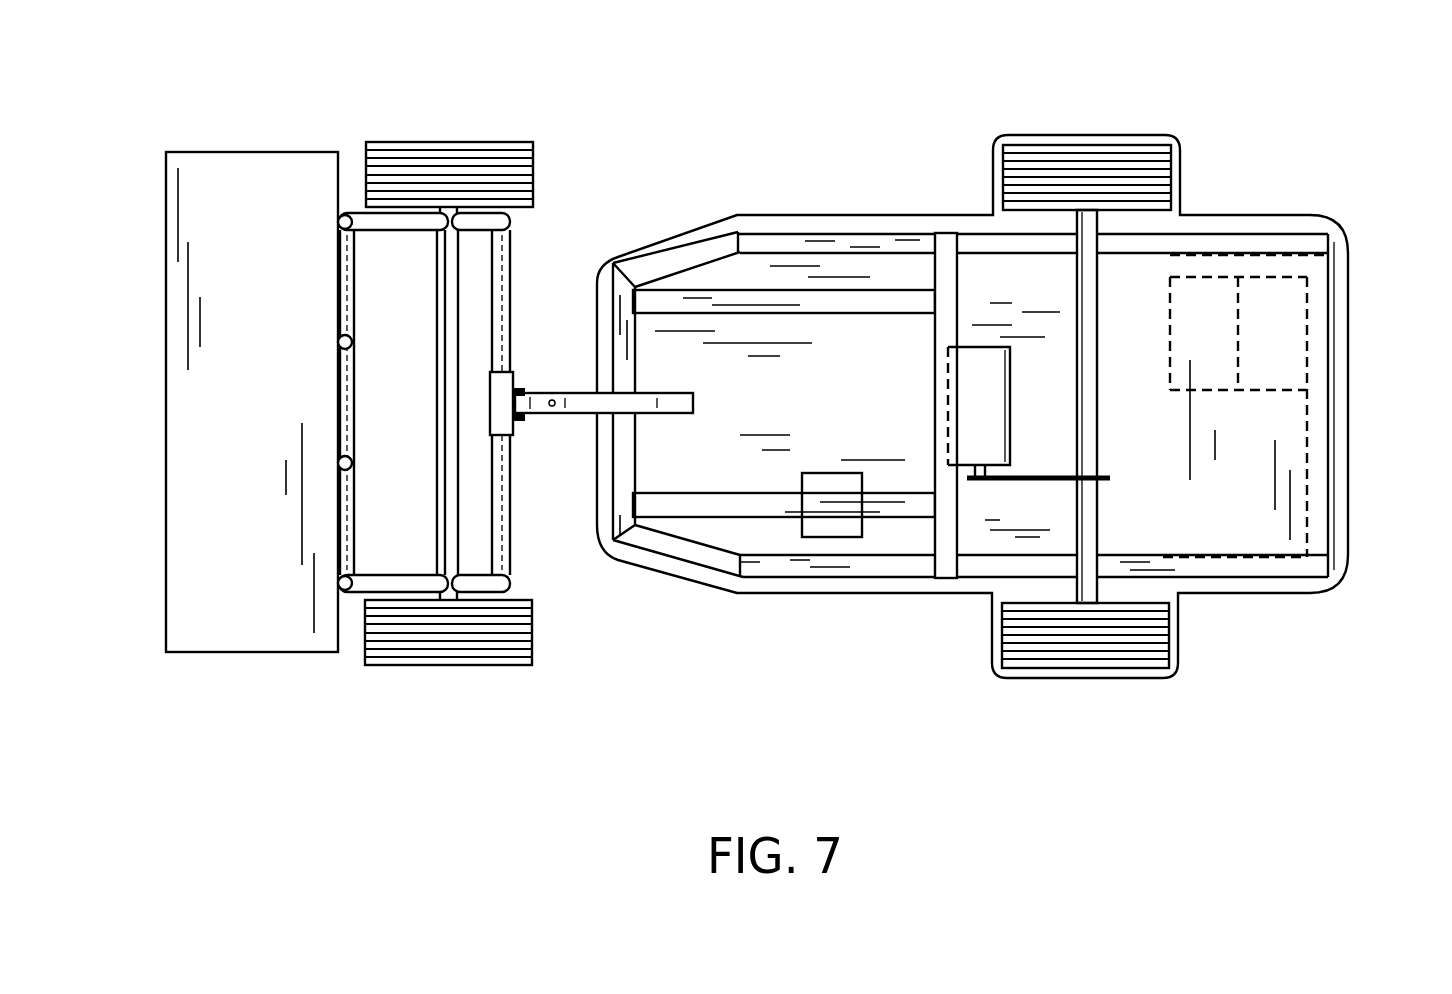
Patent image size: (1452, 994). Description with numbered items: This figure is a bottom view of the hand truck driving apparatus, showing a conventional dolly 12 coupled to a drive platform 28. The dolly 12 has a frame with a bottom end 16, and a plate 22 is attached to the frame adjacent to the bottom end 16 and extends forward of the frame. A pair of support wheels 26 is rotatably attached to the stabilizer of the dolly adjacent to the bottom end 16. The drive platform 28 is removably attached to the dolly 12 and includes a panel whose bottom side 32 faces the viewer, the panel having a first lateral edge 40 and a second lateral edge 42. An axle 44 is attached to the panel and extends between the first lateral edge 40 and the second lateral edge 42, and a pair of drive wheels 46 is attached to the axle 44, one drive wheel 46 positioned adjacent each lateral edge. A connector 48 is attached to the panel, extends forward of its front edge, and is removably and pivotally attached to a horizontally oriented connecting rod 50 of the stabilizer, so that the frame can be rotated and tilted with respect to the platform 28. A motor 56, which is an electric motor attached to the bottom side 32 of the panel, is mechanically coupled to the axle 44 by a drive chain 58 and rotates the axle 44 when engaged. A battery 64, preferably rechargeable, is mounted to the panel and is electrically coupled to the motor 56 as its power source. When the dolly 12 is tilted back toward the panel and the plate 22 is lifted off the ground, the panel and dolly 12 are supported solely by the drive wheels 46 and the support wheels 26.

The dolly 12 is at (383, 332).
The bottom end 16 is at (355, 545).
The plate 22 is at (165, 410).
The support wheels 26 is at (535, 178).
The drive platform 28 is at (774, 632).
The bottom side 32 is at (850, 375).
The first lateral edge 40 is at (773, 215).
The second lateral edge 42 is at (843, 593).
The axle 44 is at (1095, 297).
The drive wheels 46 is at (1077, 155).
The connector 48 is at (550, 418).
The connecting rod 50 is at (510, 337).
The motor 56 is at (973, 402).
The drive chain 58 is at (1020, 477).
The battery 64 is at (1267, 392).